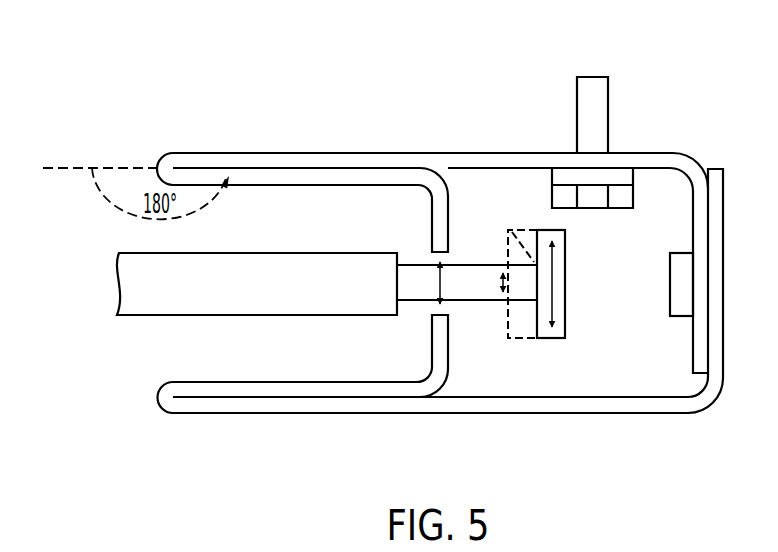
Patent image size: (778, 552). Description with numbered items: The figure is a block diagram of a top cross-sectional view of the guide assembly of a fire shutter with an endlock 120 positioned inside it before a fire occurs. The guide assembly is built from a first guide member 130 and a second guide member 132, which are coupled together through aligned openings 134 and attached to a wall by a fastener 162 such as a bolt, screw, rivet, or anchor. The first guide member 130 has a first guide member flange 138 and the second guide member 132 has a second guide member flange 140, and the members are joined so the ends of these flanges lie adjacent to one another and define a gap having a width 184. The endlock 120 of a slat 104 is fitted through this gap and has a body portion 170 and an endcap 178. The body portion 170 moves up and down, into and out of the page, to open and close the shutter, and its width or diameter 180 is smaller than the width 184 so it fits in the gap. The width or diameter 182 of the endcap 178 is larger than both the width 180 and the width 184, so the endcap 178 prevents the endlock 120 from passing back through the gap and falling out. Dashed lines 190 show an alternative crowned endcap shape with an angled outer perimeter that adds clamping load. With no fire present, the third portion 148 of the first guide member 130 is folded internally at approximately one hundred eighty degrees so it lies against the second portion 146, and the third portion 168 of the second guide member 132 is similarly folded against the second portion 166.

The slat 104 is at (145, 297).
The endlock 120 is at (540, 337).
The first guide member 130 is at (630, 153).
The second guide member 132 is at (648, 415).
The opening 134 is at (673, 298).
The first guide member flange 138 is at (432, 228).
The second guide member flange 140 is at (432, 340).
The second portion 146 is at (385, 153).
The third portion 148 is at (297, 185).
The fastener 162 is at (600, 208).
The second portion 166 is at (325, 413).
The third portion 168 is at (257, 382).
The body portion 170 is at (477, 265).
The endcap 178 is at (530, 308).
The width or diameter of the body portion 180 is at (507, 282).
The width or diameter of the endcap 182 is at (556, 292).
The width of the gap 184 is at (440, 272).
The dashed lines 190 is at (510, 228).